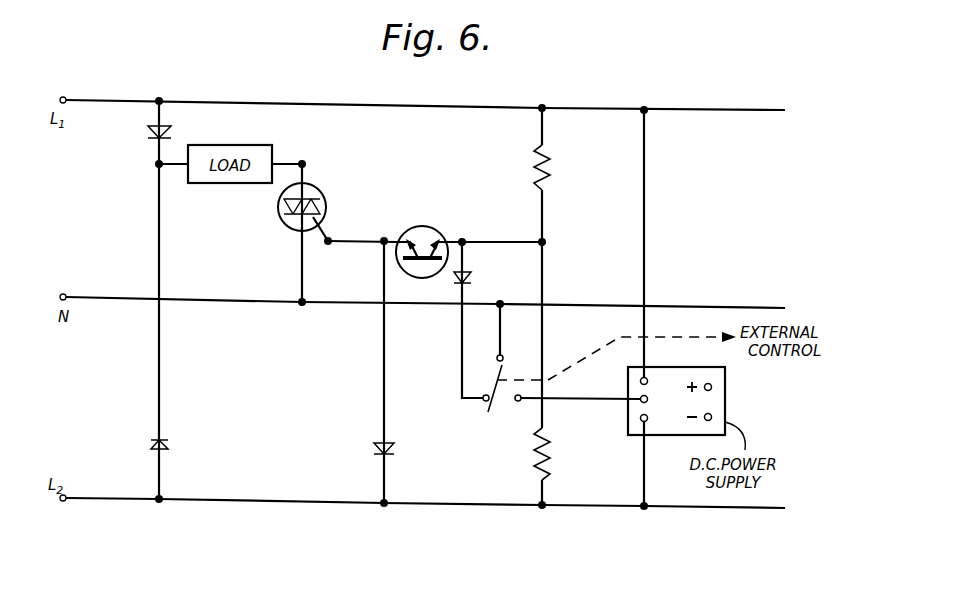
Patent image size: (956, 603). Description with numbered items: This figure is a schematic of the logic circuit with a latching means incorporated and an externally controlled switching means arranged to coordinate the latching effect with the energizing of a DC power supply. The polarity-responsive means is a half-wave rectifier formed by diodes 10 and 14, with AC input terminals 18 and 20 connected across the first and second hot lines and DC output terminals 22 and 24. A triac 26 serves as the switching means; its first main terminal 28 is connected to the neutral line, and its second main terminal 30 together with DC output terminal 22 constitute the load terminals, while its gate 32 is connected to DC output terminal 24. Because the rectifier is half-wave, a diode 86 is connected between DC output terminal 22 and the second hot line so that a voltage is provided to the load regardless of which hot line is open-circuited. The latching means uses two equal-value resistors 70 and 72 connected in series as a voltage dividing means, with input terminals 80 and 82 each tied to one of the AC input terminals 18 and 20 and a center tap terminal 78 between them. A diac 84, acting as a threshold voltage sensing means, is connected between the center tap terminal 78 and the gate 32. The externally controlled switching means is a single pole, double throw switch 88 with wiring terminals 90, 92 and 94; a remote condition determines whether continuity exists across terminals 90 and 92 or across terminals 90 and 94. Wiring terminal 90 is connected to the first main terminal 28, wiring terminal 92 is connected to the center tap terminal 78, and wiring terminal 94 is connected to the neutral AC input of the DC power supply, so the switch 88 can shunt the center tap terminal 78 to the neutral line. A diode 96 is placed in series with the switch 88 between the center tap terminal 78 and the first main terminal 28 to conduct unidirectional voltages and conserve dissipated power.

The diode 10 is at (147, 129).
The diode 14 is at (372, 447).
The AC input terminal 18 is at (159, 96).
The AC input terminal 20 is at (384, 506).
The DC output terminal 22 is at (157, 167).
The DC output terminal 24 is at (383, 238).
The triac 26 is at (282, 221).
The first main terminal 28 is at (299, 307).
The second main terminal 30 is at (306, 163).
The gate 32 is at (328, 245).
The resistor 70 is at (552, 165).
The resistor 72 is at (548, 455).
The center tap terminal 78 is at (546, 243).
The input terminal 80 is at (545, 106).
The input terminal 82 is at (542, 508).
The diac 84 is at (425, 227).
The diode 86 is at (150, 447).
The single pole, double throw switch 88 is at (500, 403).
The wiring terminal 90 is at (496, 357).
The wiring terminal 92 is at (483, 408).
The wiring terminal 94 is at (518, 405).
The diode 96 is at (474, 281).